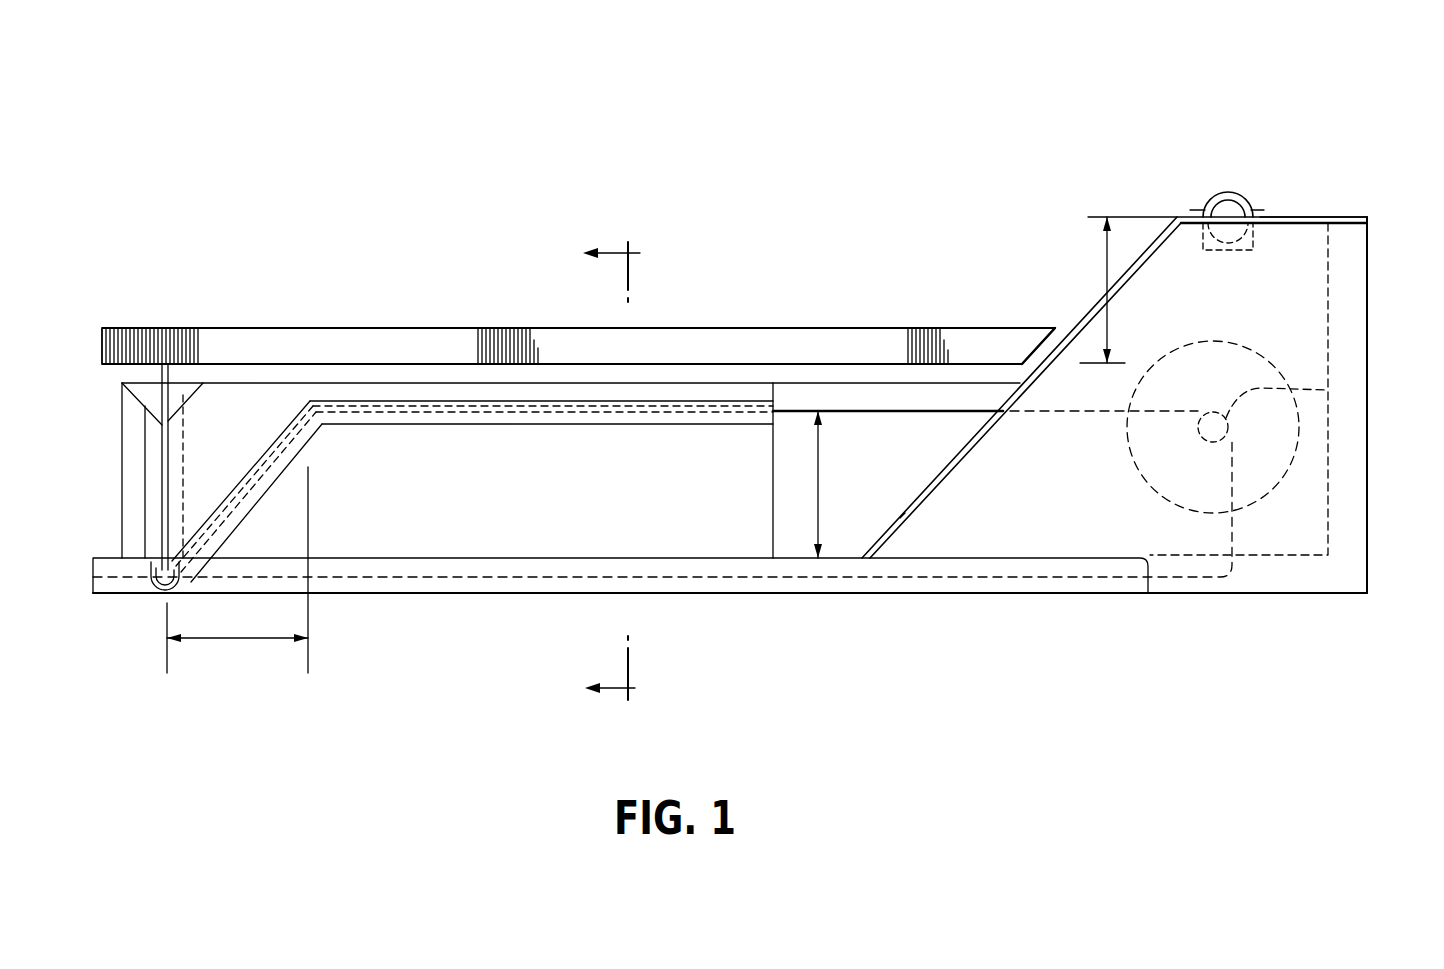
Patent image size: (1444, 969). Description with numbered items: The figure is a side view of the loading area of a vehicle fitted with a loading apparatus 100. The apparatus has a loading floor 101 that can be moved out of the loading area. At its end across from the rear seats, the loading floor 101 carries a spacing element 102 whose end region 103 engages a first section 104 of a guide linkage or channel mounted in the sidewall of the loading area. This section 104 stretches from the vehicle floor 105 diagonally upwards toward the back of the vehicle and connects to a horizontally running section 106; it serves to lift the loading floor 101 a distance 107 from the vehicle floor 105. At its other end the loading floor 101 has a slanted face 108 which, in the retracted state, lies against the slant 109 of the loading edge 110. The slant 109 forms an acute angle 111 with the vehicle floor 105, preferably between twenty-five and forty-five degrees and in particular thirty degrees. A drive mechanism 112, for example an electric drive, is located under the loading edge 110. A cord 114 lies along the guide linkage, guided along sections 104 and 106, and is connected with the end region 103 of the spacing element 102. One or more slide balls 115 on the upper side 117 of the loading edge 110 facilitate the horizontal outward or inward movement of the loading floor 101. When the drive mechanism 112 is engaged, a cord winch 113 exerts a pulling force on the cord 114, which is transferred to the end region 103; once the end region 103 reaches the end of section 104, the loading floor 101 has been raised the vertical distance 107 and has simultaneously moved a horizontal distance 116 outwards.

The loading apparatus 100 is at (236, 176).
The loading floor 101 is at (837, 327).
The spacing element 102 is at (170, 464).
The end region 103 is at (147, 592).
The first section 104 is at (240, 507).
The vehicle floor 105 is at (435, 558).
The horizontally running section 106 is at (557, 427).
The distance 107 is at (1107, 316).
The face 108 is at (1033, 349).
The slant 109 is at (962, 463).
The loading edge 110 is at (1121, 532).
The acute angle 111 is at (916, 529).
The drive mechanism 112 is at (1226, 338).
The cord winch 113 is at (1328, 390).
The cord 114 is at (690, 582).
The slide ball 115 is at (1220, 192).
The horizontal distance 116 is at (247, 638).
The upper side 117 is at (1291, 215).